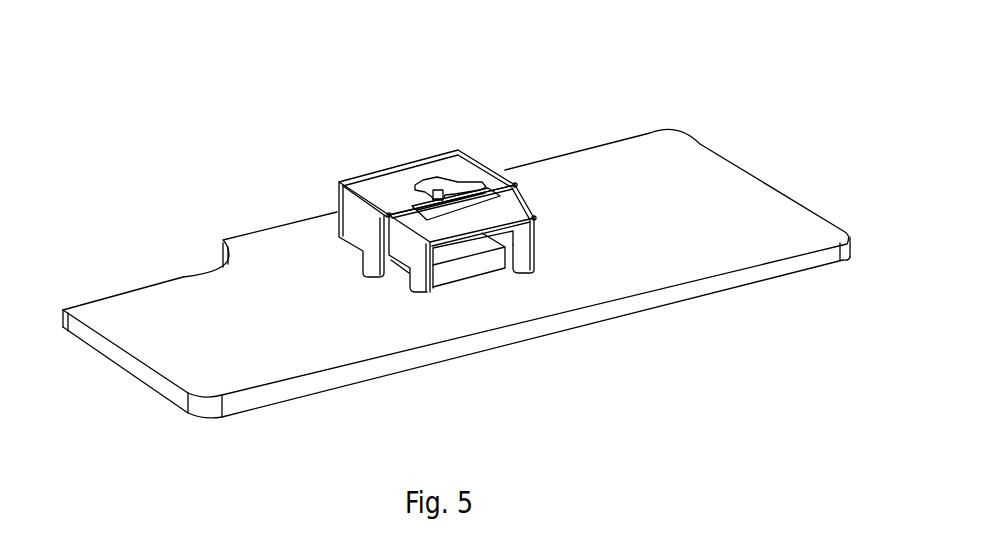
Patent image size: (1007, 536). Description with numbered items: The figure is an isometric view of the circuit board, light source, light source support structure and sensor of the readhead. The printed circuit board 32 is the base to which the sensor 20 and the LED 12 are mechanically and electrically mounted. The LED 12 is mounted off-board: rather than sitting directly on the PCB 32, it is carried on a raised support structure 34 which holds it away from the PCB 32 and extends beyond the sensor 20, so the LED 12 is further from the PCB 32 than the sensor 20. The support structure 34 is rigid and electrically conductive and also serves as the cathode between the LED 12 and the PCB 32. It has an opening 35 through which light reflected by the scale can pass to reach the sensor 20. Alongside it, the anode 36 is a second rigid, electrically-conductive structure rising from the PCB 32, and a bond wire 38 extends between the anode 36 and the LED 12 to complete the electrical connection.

The printed circuit board 32 is at (240, 238).
The anode 36 is at (339, 158).
The bond wire 38 is at (438, 182).
The LED 12 is at (440, 190).
The support structure 34 is at (402, 253).
The opening 35 is at (486, 193).
The sensor 20 is at (463, 257).